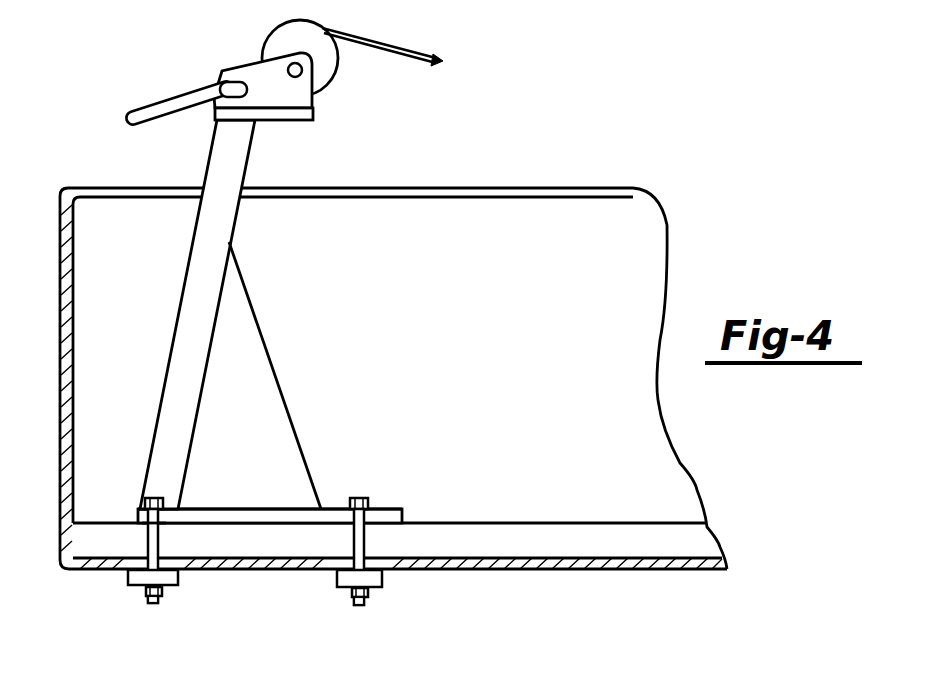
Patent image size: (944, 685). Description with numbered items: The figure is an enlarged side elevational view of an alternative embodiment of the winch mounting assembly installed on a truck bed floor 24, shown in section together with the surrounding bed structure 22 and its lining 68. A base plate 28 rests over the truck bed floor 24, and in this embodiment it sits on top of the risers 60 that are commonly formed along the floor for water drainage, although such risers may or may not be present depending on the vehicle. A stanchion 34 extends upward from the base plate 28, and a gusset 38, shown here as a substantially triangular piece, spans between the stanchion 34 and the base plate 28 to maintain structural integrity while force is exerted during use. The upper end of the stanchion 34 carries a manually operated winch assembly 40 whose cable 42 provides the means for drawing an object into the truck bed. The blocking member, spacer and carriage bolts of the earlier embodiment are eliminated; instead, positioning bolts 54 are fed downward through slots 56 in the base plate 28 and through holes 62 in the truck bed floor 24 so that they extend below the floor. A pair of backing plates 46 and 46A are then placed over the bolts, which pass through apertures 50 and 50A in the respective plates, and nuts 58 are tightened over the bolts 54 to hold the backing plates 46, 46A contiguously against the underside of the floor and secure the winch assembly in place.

The tank 22 is at (73, 232).
The truck bed floor 24 is at (545, 560).
The base plate 28 is at (385, 519).
The stanchion 34 is at (226, 214).
The gusset 38 is at (237, 328).
The winch assembly 40 is at (284, 38).
The cable 42 is at (402, 43).
The backing plate 46 is at (130, 573).
The backing plate 46A is at (382, 577).
The aperture 50 is at (178, 577).
The aperture 50A is at (352, 577).
The positioning bolt 54 is at (165, 538).
The slot 56 is at (140, 517).
The nut 58 is at (150, 598).
The riser 60 is at (458, 544).
The hole 62 is at (147, 548).
The liner 68 is at (637, 560).